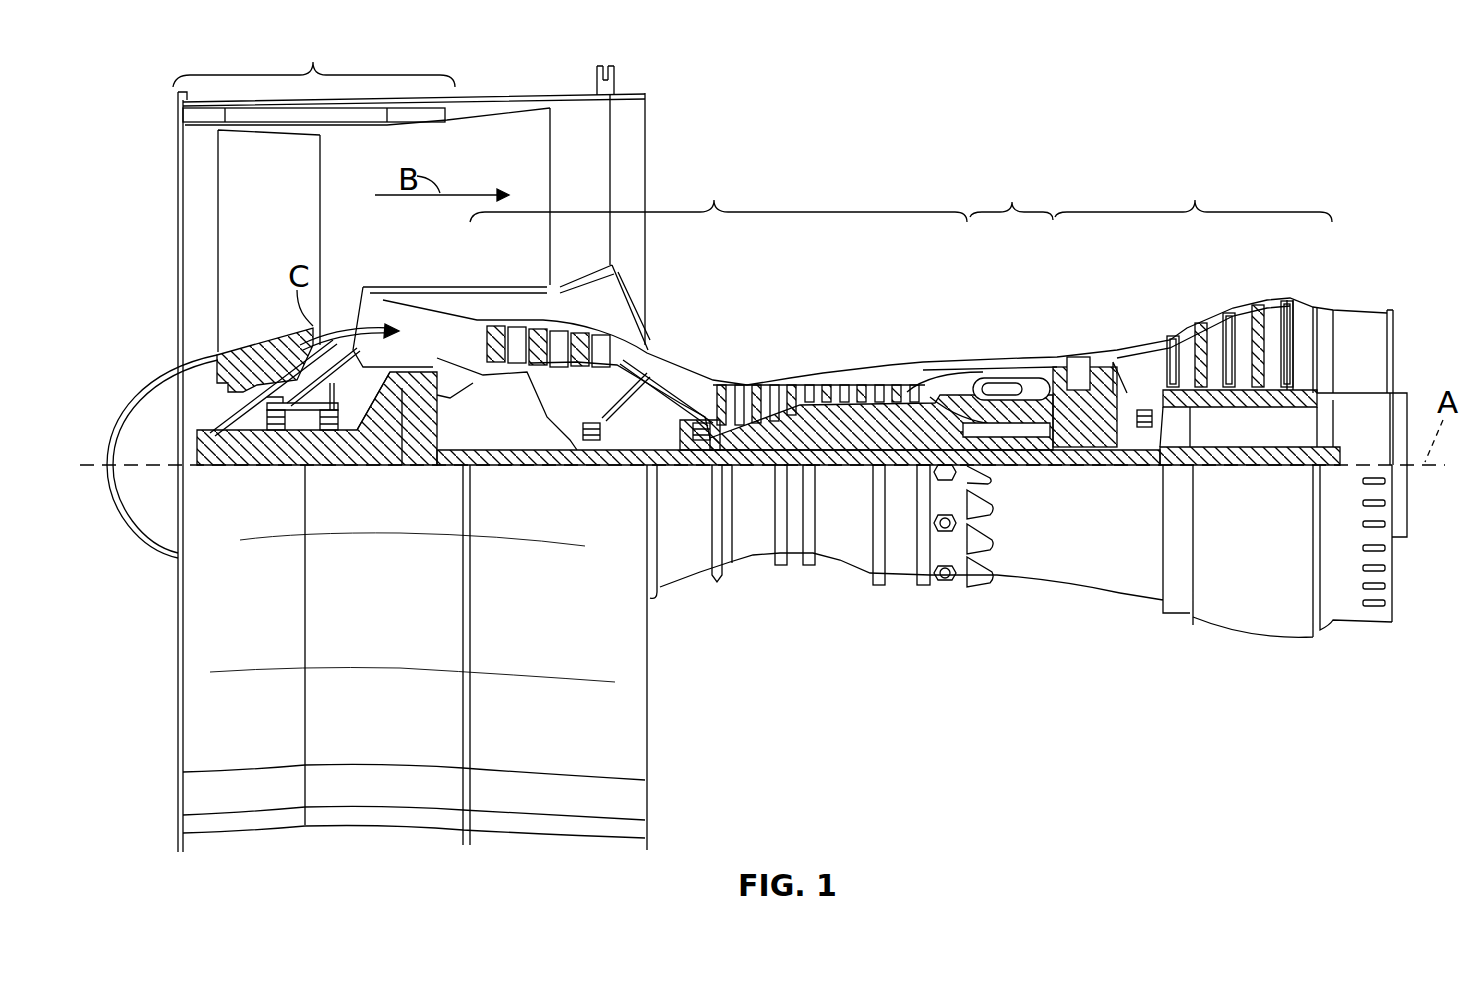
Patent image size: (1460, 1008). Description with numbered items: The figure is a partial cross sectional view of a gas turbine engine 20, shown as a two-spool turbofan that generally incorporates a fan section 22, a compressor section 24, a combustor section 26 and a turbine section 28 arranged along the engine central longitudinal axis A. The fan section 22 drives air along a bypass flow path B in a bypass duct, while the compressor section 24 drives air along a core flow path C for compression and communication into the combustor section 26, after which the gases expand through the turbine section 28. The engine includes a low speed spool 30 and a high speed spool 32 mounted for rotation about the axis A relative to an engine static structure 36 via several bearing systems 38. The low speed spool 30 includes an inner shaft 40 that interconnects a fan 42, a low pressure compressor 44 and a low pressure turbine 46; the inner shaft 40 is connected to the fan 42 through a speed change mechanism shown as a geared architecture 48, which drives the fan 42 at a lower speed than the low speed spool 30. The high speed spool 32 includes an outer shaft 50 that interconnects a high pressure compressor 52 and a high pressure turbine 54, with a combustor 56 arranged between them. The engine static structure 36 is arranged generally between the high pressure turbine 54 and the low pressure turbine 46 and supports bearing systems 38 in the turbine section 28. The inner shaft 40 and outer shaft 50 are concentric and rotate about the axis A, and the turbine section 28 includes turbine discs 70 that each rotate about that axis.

The gas turbine engine 20 is at (1148, 150).
The fan section 22 is at (314, 55).
The compressor section 24 is at (718, 192).
The combustor section 26 is at (1011, 194).
The turbine section 28 is at (1193, 193).
The low speed spool 30 is at (864, 474).
The high speed spool 32 is at (907, 423).
The engine static structure 36 is at (903, 580).
The bearing systems 38 is at (280, 425).
The inner shaft 40 is at (660, 455).
The fan 42 is at (294, 231).
The low pressure compressor 44 is at (558, 328).
The low pressure turbine 46 is at (1243, 322).
The geared architecture 48 is at (417, 430).
The outer shaft 50 is at (1027, 463).
The high pressure compressor 52 is at (823, 430).
The high pressure turbine 54 is at (1088, 357).
The combustor 56 is at (1020, 387).
The turbine discs 70 is at (1277, 398).